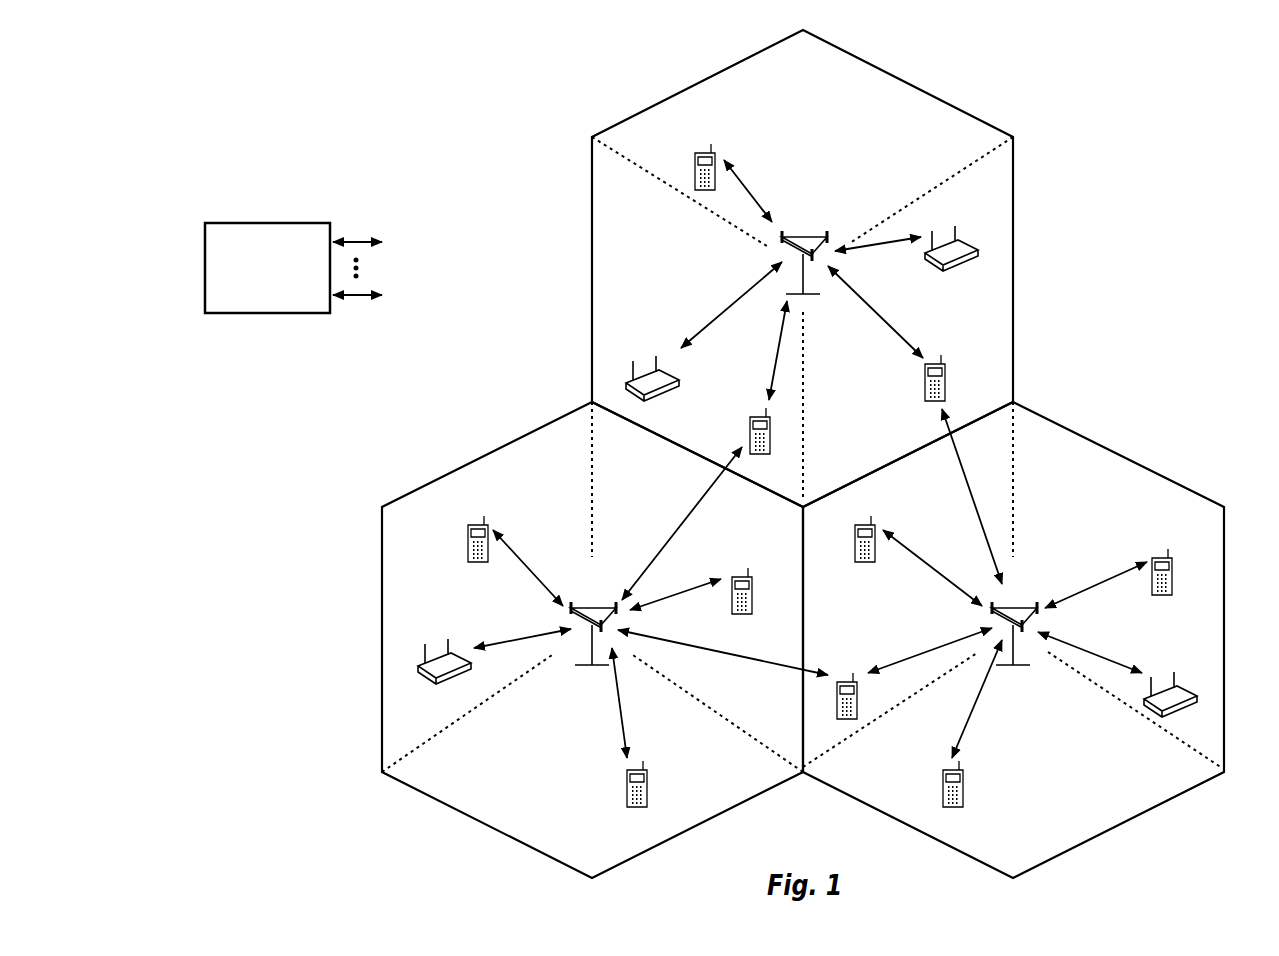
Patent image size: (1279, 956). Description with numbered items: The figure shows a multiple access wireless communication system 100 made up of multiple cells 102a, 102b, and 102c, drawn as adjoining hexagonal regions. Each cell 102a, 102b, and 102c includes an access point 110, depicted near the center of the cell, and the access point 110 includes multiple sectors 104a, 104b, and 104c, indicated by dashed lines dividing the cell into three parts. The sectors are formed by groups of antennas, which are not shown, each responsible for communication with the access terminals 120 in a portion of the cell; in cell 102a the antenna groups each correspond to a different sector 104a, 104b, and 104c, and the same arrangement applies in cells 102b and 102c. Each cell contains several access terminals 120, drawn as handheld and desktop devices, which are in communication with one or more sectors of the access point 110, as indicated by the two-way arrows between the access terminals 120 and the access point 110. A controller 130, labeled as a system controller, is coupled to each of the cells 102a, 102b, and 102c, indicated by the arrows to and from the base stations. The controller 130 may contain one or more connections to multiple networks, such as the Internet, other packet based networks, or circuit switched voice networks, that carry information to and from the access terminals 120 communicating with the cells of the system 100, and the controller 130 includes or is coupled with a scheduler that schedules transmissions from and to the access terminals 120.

The multiple access wireless communication system 100 is at (1158, 97).
The cell 102a is at (921, 68).
The cell 102b is at (488, 453).
The cell 102c is at (1132, 437).
The sector 104a is at (826, 89).
The sector 104b is at (650, 240).
The sector 104c is at (896, 441).
The access point 110 is at (799, 236).
The access terminal 120 is at (695, 159).
The controller 130 is at (262, 223).